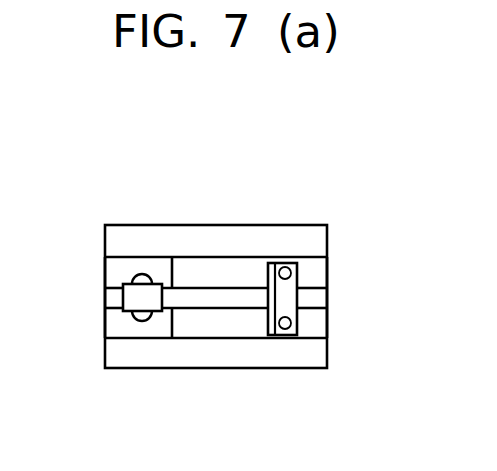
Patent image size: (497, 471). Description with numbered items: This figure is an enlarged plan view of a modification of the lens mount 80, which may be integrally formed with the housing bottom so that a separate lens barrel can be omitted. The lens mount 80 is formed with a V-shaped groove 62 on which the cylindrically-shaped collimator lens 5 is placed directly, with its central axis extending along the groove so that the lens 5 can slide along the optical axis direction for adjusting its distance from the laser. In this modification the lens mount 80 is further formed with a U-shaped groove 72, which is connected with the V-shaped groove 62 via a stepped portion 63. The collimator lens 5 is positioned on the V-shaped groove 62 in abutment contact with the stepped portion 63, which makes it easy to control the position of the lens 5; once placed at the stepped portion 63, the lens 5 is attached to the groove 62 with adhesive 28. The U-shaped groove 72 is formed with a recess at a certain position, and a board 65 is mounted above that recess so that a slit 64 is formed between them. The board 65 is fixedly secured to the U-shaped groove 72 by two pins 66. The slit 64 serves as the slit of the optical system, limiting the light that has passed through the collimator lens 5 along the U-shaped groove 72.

The lens mount 80 is at (379, 151).
The adhesive 28 is at (139, 275).
The U-shaped groove 72 is at (218, 277).
The pins 66 is at (286, 268).
The V-shaped groove 62 is at (116, 275).
The board 65 is at (285, 296).
The slit 64 is at (306, 298).
The stepped portion 63 is at (170, 309).
The collimator lens 5 is at (140, 296).